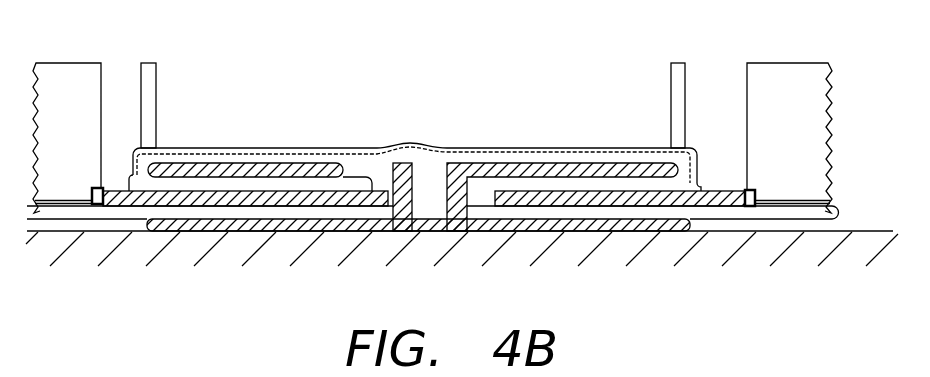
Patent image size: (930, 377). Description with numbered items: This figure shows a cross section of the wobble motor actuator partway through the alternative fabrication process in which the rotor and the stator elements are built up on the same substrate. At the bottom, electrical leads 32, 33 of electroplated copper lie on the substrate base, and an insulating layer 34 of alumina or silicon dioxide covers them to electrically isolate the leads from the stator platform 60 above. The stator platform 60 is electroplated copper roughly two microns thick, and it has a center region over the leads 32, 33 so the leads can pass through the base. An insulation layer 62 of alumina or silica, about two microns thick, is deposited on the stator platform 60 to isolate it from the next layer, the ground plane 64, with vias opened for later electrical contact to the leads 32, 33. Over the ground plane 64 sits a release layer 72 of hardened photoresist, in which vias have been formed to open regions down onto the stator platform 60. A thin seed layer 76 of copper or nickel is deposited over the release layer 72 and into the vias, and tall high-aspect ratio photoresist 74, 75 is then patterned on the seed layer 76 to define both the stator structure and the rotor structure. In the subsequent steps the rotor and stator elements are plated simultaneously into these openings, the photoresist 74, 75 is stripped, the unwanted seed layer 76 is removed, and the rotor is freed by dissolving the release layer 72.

The electrical lead 32 is at (185, 222).
The electrical lead 33 is at (597, 233).
The insulating layer 34 is at (118, 214).
The stator platform 60 is at (103, 206).
The insulation layer 62 is at (248, 185).
The ground plane 64 is at (188, 165).
The release layer 72 is at (376, 157).
The high-aspect ratio photoresist 74 is at (73, 75).
The high-aspect ratio photoresist 75 is at (148, 67).
The seed layer 76 is at (480, 152).